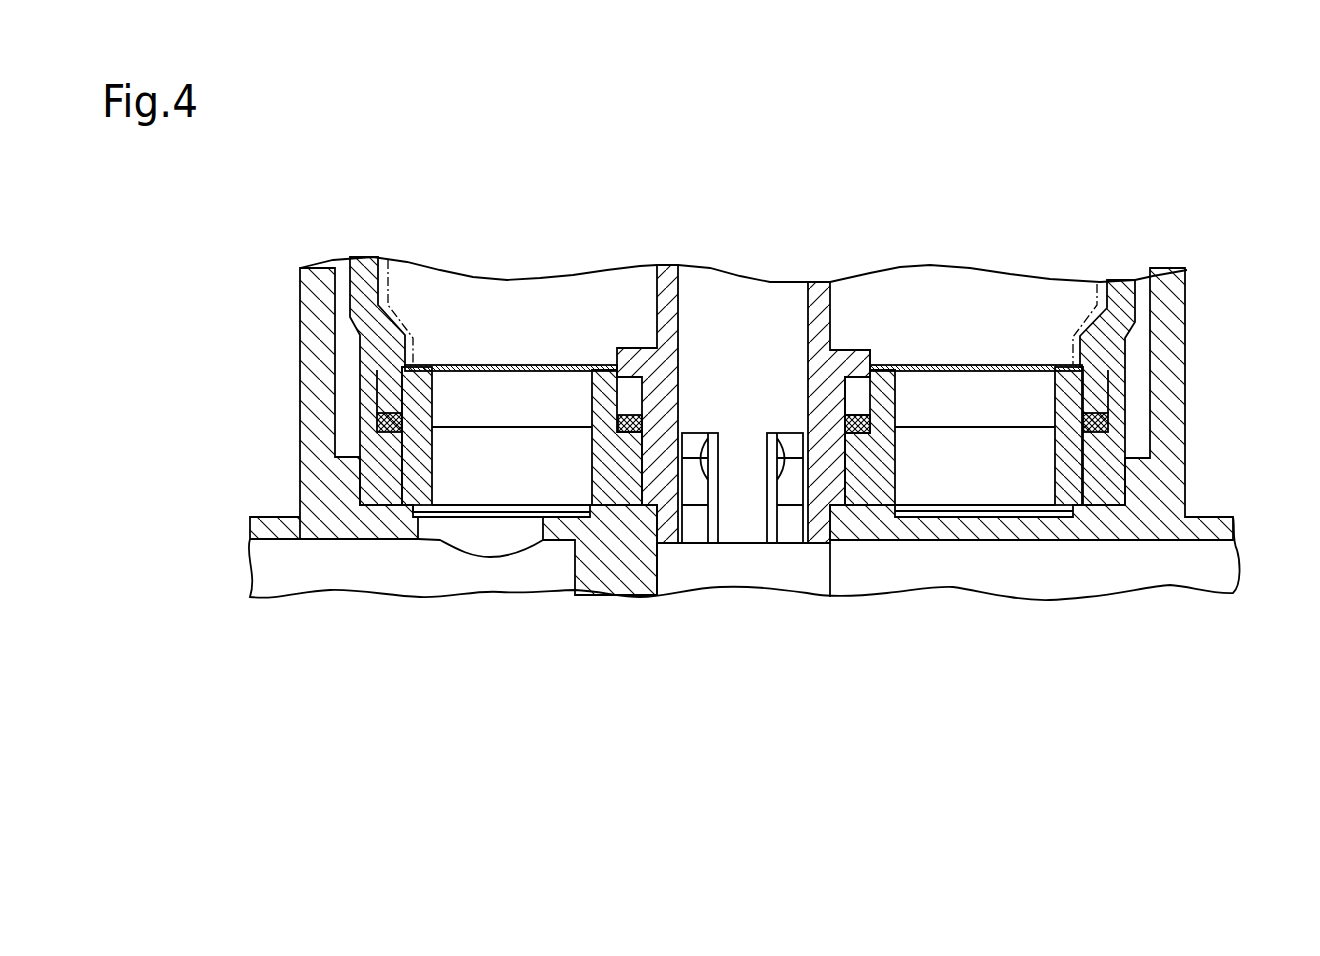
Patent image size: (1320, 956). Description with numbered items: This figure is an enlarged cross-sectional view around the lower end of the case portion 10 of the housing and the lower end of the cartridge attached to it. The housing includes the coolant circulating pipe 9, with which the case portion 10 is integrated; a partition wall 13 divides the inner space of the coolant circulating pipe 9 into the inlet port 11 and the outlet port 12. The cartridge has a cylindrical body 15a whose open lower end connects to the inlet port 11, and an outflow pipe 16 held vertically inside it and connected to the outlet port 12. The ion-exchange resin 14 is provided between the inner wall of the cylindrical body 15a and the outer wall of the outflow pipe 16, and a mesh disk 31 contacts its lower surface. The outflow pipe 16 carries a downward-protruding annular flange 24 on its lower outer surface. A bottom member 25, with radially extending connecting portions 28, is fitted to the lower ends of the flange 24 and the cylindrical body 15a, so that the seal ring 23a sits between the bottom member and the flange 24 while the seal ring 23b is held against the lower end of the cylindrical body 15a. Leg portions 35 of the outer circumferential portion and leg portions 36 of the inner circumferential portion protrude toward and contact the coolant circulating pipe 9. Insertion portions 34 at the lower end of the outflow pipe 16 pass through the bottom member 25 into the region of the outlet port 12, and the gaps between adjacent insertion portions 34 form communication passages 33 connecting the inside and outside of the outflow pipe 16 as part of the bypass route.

The coolant circulating pipe 9 is at (257, 521).
The case portion 10 is at (305, 318).
The inlet port 11 is at (303, 540).
The outlet port 12 is at (766, 573).
The partition wall 13 is at (605, 576).
The ion-exchange resin 14 is at (386, 260).
The cylindrical body 15a is at (1130, 297).
The outflow pipe 16 is at (830, 303).
The seal ring 23a is at (630, 414).
The seal ring 23b is at (378, 421).
The flange 24 is at (873, 352).
The bottom member 25 is at (584, 462).
The connecting portion 28 is at (488, 440).
The mesh disk 31 is at (502, 364).
The communication passage 33 is at (786, 458).
The insertion portion 34 is at (670, 545).
The leg portion 35 is at (422, 483).
The leg portion 36 is at (590, 486).